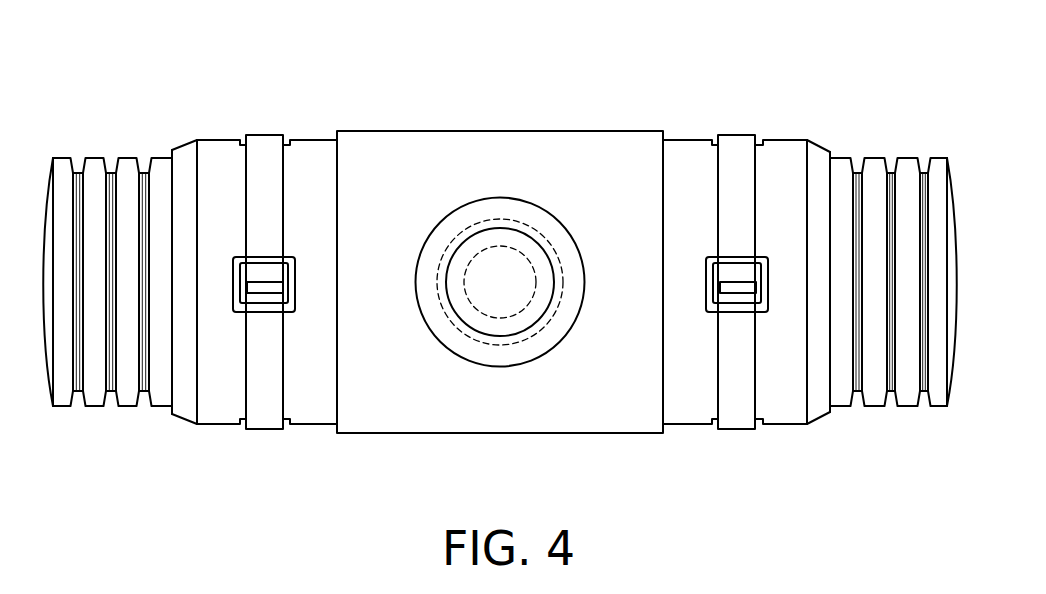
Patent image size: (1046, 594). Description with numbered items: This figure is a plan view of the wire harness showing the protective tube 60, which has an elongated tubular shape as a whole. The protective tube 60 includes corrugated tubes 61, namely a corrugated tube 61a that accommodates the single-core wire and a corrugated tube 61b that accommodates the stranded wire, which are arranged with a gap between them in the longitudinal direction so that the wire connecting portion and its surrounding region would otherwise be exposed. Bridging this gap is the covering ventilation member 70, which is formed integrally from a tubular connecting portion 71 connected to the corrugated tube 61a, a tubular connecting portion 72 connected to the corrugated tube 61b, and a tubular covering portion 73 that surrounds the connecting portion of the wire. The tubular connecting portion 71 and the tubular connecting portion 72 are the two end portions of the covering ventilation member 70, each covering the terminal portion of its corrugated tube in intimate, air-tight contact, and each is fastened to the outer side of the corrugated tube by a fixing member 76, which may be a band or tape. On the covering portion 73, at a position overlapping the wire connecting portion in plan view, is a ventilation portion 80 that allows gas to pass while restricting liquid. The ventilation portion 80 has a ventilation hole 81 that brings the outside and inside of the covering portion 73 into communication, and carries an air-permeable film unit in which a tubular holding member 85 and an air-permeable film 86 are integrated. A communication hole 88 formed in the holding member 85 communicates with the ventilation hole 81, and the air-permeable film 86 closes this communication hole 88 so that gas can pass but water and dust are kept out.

The protective tube 60 is at (857, 66).
The corrugated tubes 61 is at (502, 252).
The corrugated tube 61a is at (93, 157).
The corrugated tube 61b is at (872, 157).
The covering ventilation member 70 is at (663, 79).
The tubular connecting portion 71 is at (328, 130).
The tubular connecting portion 72 is at (680, 130).
The covering portion 73 is at (500, 140).
The fixing members 76 is at (265, 142).
The ventilation portion 80 is at (572, 192).
The ventilation hole 81 is at (476, 322).
The holding member 85 is at (563, 338).
The air-permeable film 86 is at (554, 290).
The communication hole 88 is at (535, 280).